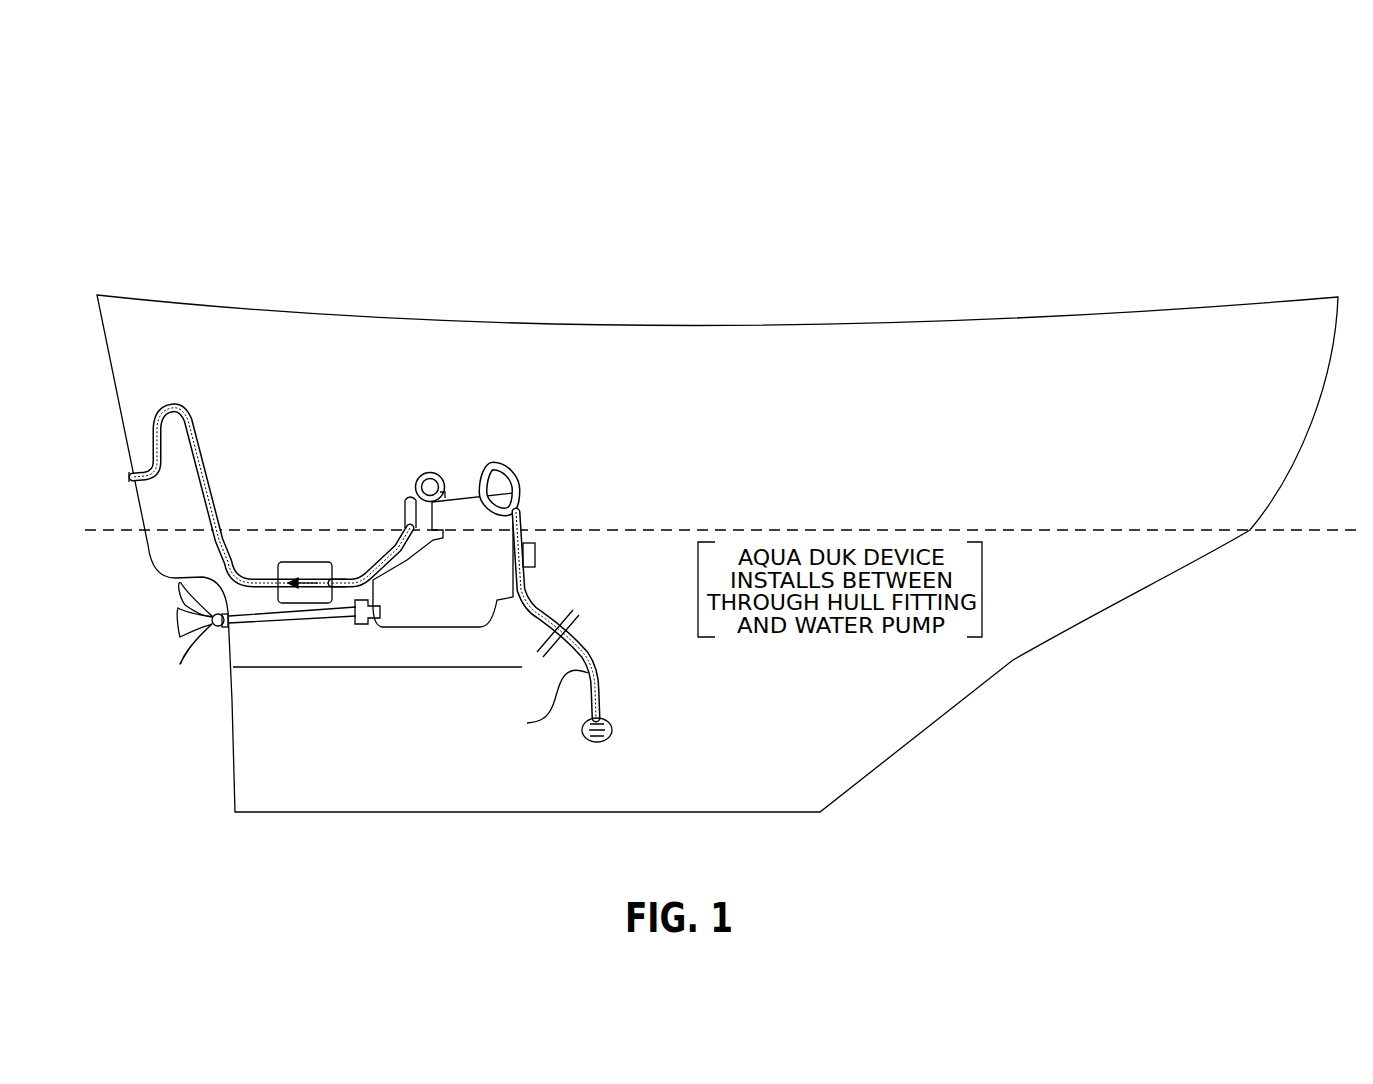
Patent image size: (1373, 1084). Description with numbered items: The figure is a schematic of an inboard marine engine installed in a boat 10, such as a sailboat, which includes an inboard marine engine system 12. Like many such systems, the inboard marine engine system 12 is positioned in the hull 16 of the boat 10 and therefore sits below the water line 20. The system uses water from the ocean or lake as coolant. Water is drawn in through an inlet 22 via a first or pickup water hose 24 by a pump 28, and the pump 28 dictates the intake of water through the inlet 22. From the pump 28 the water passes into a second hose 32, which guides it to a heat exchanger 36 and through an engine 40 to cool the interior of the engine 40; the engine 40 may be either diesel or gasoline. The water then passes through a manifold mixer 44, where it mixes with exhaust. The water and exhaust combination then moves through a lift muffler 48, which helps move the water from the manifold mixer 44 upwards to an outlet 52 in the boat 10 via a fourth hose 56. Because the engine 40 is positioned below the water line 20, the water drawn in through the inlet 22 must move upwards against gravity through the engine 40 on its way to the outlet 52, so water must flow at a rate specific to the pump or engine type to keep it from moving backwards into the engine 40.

The boat 10 is at (223, 123).
The inboard marine engine system 12 is at (660, 450).
The hull 16 is at (1280, 493).
The water line 20 is at (1270, 533).
The inlet 22 is at (582, 728).
The first or pickup water hose 24 is at (606, 688).
The pump 28 is at (532, 592).
The second hose 32 is at (527, 490).
The heat exchanger 36 is at (465, 492).
The engine 40 is at (457, 628).
The manifold mixer 44 is at (406, 509).
The lift muffler 48 is at (302, 561).
The outlet 52 is at (132, 477).
The fourth hose 56 is at (177, 401).